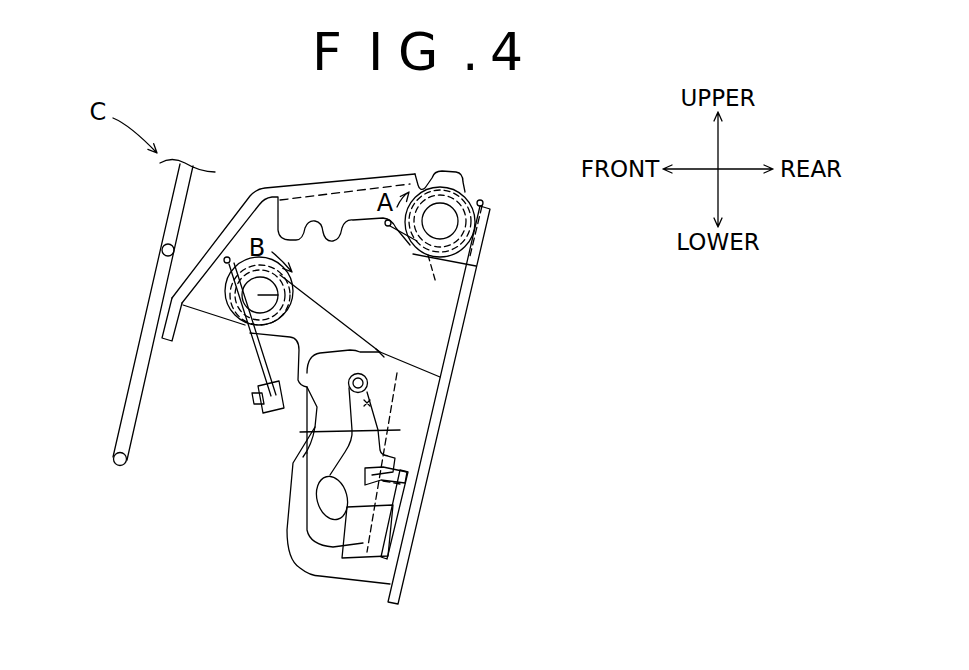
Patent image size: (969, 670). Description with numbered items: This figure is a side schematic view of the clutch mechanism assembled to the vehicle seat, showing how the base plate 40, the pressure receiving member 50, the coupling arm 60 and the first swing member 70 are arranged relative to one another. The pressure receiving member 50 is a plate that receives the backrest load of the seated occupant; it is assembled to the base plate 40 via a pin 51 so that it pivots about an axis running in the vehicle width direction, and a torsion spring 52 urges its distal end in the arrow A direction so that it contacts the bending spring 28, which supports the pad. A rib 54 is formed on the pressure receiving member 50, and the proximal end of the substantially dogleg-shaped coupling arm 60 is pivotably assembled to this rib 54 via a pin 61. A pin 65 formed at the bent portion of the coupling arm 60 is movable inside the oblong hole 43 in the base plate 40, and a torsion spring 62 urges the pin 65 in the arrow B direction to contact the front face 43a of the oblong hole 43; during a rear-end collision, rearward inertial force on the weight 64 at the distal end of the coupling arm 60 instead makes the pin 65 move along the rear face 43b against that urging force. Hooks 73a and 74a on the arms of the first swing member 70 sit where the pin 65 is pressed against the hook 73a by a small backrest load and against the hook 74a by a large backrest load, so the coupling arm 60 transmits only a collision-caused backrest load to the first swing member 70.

The bending spring 28 is at (150, 302).
The base plate 40 is at (486, 298).
The oblong hole 43 is at (390, 407).
The front face 43a is at (317, 430).
The rear face 43b is at (400, 430).
The pressure receiving member 50 is at (317, 171).
The pin 51 is at (442, 217).
The torsion spring 52 is at (431, 284).
The rib 54 is at (187, 315).
The coupling arm 60 is at (268, 344).
The pin 61 is at (263, 296).
The torsion spring 62 is at (284, 304).
The weight 64 is at (292, 489).
The pin 65 is at (380, 353).
The first swing member 70 is at (405, 521).
The hook 73a is at (407, 483).
The hook 74a is at (350, 553).